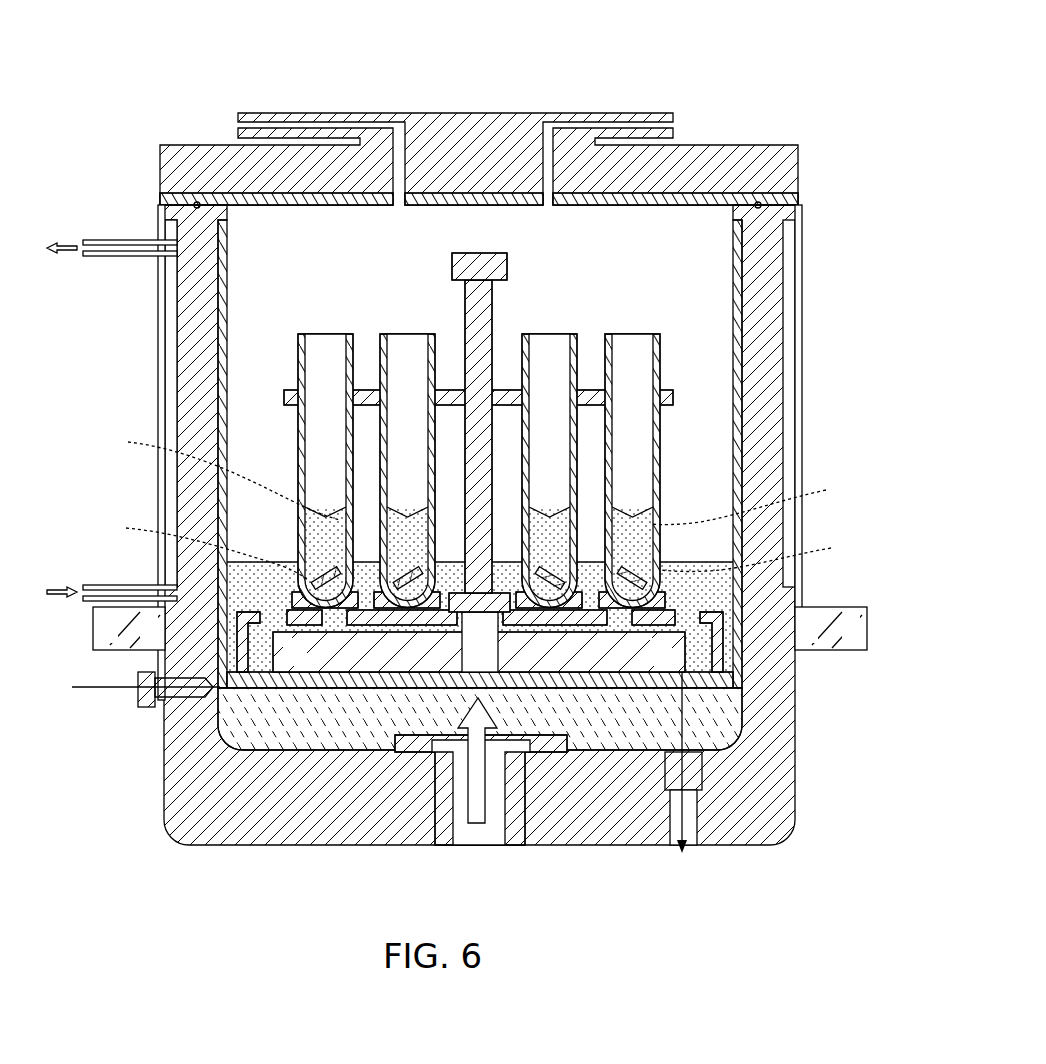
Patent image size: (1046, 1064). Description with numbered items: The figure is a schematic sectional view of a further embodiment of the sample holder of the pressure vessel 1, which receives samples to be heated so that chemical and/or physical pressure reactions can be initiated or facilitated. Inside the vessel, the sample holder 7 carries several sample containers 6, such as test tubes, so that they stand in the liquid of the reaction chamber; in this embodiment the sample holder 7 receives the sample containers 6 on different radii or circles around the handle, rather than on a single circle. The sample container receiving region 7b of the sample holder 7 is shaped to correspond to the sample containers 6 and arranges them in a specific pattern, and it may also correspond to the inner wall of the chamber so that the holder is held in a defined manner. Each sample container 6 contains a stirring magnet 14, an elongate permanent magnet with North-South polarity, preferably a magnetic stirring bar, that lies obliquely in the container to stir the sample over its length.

The pressure vessel 1 is at (788, 63).
The sample container 6 is at (380, 332).
The sample holder 7 is at (573, 290).
The sample container receiving region 7b is at (215, 583).
The stirring magnet 14 is at (305, 572).